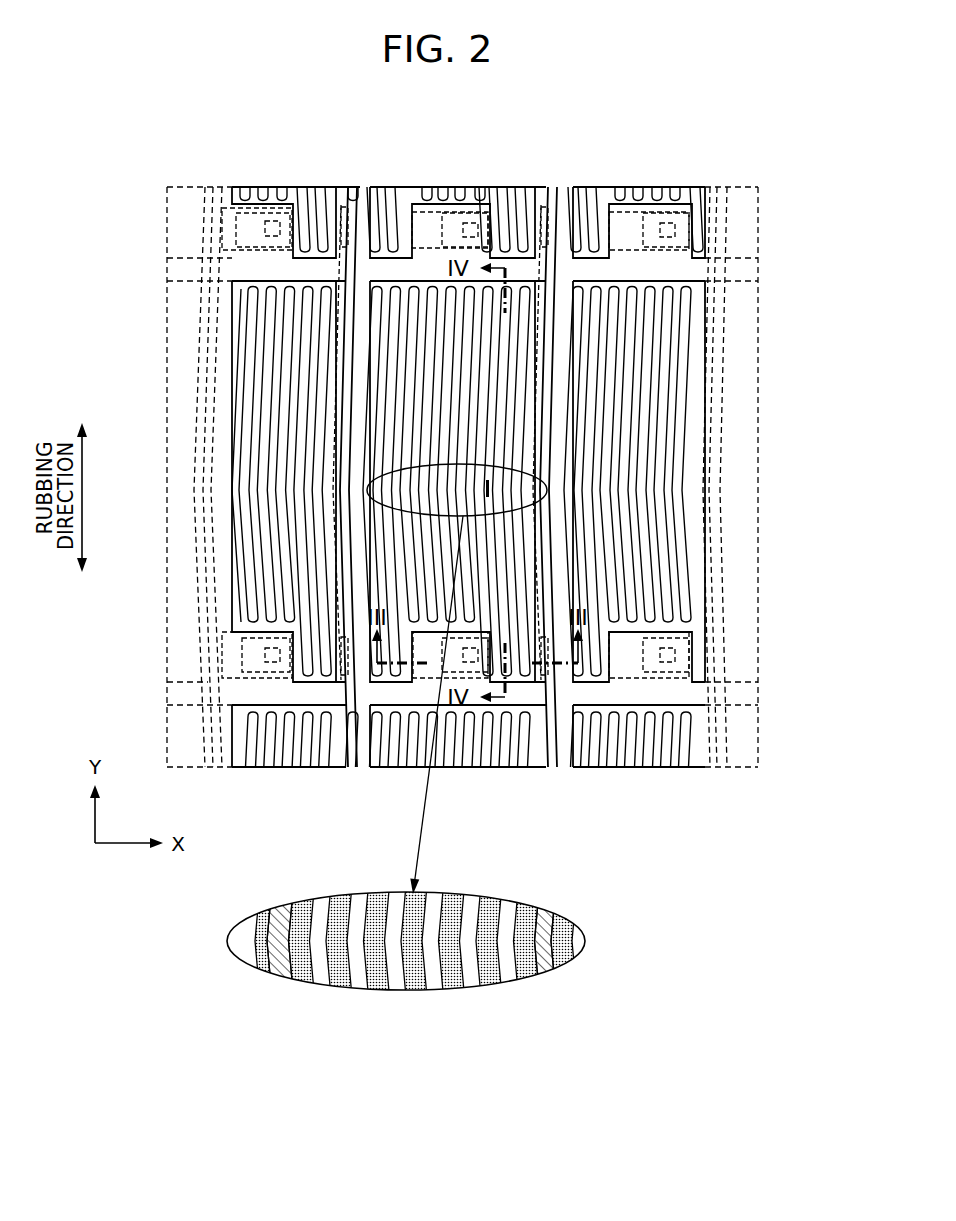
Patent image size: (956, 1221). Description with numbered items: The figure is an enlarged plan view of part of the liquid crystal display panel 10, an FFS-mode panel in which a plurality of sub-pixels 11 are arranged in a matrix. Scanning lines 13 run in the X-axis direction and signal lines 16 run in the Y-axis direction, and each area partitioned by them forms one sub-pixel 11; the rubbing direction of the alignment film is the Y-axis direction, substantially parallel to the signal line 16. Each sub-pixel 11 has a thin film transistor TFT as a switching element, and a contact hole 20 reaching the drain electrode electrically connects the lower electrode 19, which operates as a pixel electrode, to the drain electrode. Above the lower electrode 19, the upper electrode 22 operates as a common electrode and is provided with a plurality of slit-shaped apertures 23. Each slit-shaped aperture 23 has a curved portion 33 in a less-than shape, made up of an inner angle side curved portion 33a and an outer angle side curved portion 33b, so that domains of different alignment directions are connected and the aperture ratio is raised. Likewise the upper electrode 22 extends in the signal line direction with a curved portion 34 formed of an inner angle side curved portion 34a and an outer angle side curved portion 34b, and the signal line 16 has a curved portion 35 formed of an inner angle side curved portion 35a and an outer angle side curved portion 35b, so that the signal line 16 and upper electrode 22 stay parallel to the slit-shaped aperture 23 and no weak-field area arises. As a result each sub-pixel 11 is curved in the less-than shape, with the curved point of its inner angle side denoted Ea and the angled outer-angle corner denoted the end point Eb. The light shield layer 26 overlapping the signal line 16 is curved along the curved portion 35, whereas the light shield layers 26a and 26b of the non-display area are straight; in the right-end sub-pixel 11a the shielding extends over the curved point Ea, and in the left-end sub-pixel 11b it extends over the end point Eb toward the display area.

The liquid crystal display panel 10 is at (428, 109).
The sub-pixel 11 is at (436, 272).
The sub-pixel (right end) 11a is at (657, 272).
The sub-pixel (left end) 11b is at (262, 272).
The scanning line 13 is at (182, 690).
The signal line 16 is at (205, 578).
The lower electrode 19 is at (272, 318).
The contact hole 20 is at (272, 663).
The upper electrode 22 is at (270, 406).
The slit-shaped aperture 23 is at (283, 376).
The light shield layer 26 is at (483, 678).
The light shield layer of the non-display area 26a is at (740, 553).
The light shield layer of the non-display area 26b is at (182, 462).
The curved portion 33 is at (508, 905).
The inner angle side curved portion 33a is at (522, 953).
The outer angle side curved portion 33b is at (303, 953).
The curved portion 34 is at (455, 893).
The inner angle side curved portion 34a is at (535, 953).
The outer angle side curved portion 34b is at (281, 957).
The curved portion 35 is at (558, 918).
The inner angle side curved portion 35a is at (557, 953).
The outer angle side curved portion 35b is at (267, 938).
The thin film transistor TFT is at (242, 650).
The curved point Ea is at (712, 492).
The end point Eb is at (218, 278).